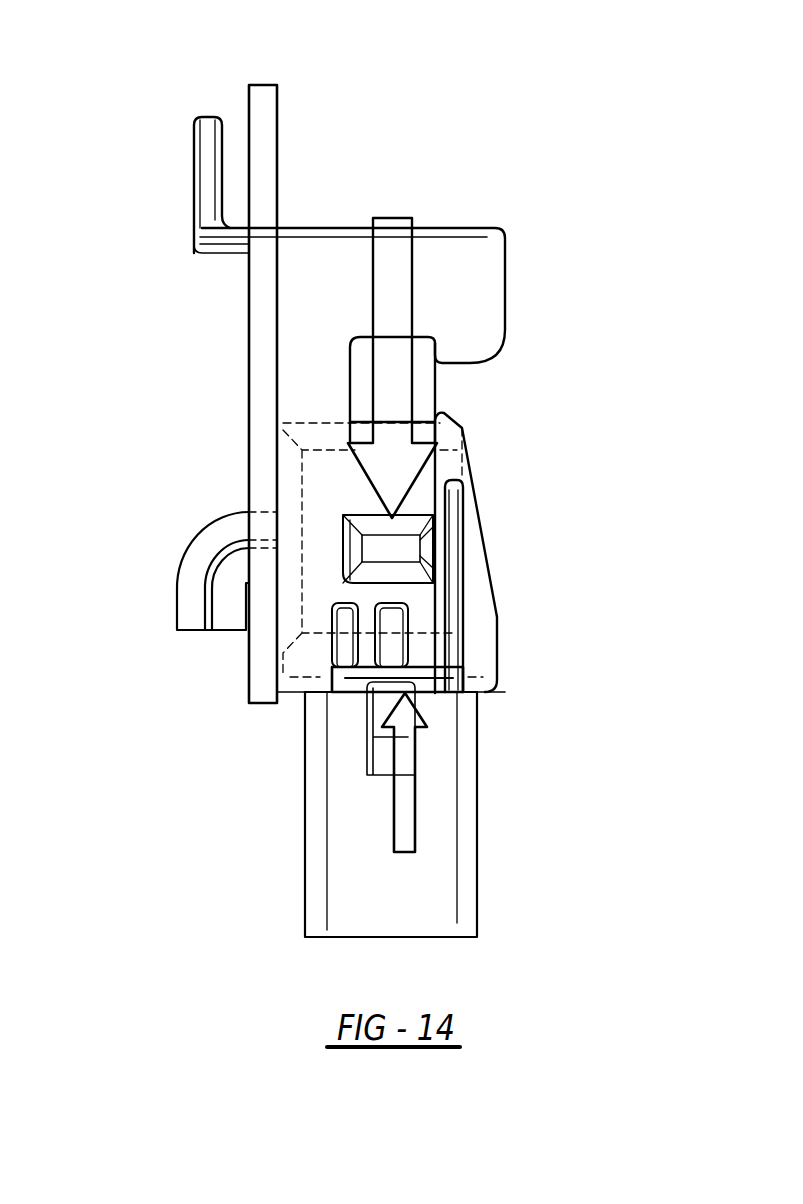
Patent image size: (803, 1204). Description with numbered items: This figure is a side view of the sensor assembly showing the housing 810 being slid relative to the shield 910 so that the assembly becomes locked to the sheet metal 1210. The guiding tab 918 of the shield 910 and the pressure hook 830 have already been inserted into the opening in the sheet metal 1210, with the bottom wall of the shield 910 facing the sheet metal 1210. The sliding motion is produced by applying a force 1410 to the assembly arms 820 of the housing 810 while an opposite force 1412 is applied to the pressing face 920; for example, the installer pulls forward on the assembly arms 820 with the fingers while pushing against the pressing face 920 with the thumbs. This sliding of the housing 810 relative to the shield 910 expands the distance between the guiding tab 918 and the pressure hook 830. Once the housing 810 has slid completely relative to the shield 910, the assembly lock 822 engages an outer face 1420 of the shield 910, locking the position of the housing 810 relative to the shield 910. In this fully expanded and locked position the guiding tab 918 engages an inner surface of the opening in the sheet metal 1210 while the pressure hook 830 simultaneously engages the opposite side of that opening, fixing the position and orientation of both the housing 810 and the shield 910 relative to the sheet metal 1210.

The sheet metal 1210 is at (268, 114).
The guiding tab 918 is at (208, 151).
The shield 910 is at (312, 274).
The force 1410 is at (412, 283).
The housing 810 is at (358, 500).
The assembly arms 820 is at (402, 548).
The pressure hook 830 is at (185, 596).
The outer face 1420 is at (352, 693).
The pressing face 920 is at (440, 685).
The assembly lock 822 is at (383, 733).
The opposite force 1412 is at (415, 818).